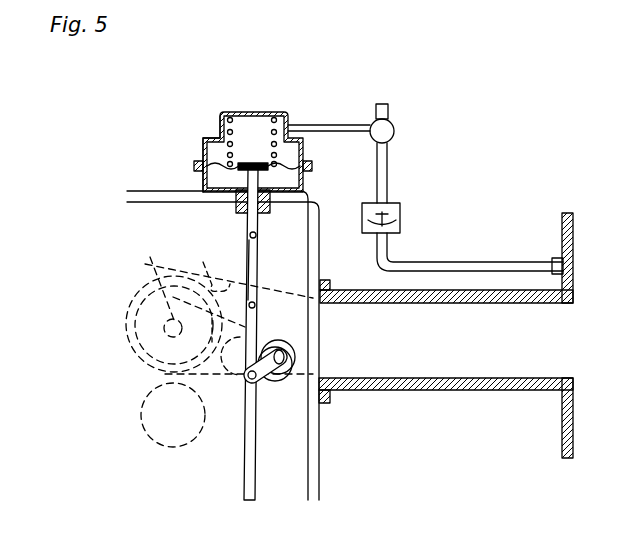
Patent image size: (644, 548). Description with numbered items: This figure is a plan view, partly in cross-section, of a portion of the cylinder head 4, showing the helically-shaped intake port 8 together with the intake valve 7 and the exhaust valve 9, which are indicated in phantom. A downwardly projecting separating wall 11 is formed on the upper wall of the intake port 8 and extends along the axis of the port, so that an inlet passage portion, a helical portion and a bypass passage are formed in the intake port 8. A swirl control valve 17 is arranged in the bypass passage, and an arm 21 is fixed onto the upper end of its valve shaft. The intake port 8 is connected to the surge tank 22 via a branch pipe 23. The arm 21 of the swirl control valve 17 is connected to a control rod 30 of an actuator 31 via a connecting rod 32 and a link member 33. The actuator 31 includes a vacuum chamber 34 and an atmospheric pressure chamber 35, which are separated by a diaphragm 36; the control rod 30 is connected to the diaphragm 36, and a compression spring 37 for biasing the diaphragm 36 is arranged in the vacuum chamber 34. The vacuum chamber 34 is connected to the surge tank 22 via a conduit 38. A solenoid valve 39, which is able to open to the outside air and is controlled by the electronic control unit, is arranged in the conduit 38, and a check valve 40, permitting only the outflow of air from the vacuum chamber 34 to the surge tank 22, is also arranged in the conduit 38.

The cylinder head 4 is at (300, 478).
The intake valve 7 is at (245, 336).
The helically-shaped intake port 8 is at (211, 291).
The exhaust valve 9 is at (157, 428).
The separating wall 11 is at (225, 306).
The swirl control valve 17 is at (281, 387).
The arm 21 is at (262, 383).
The surge tank 22 is at (563, 418).
The branch pipe 23 is at (417, 388).
The control rod 30 is at (248, 232).
The actuator 31 is at (222, 112).
The connecting rod 32 is at (246, 474).
The link member 33 is at (257, 262).
The vacuum chamber 34 is at (203, 146).
The atmospheric pressure chamber 35 is at (220, 179).
The diaphragm 36 is at (300, 157).
The compression spring 37 is at (268, 145).
The conduit 38 is at (368, 131).
The solenoid valve 39 is at (392, 122).
The check valve 40 is at (400, 206).